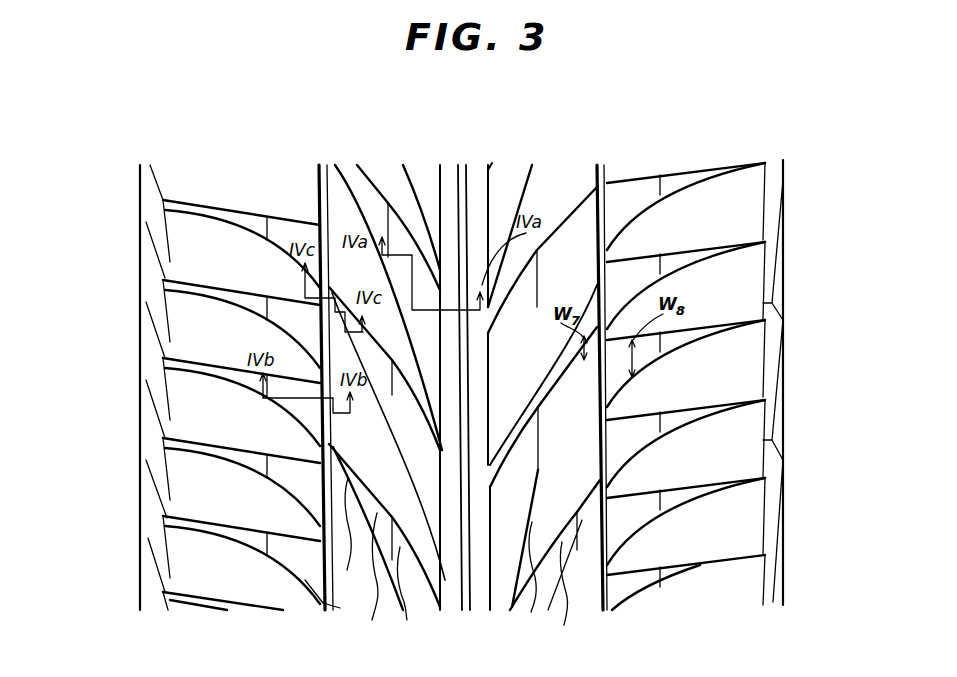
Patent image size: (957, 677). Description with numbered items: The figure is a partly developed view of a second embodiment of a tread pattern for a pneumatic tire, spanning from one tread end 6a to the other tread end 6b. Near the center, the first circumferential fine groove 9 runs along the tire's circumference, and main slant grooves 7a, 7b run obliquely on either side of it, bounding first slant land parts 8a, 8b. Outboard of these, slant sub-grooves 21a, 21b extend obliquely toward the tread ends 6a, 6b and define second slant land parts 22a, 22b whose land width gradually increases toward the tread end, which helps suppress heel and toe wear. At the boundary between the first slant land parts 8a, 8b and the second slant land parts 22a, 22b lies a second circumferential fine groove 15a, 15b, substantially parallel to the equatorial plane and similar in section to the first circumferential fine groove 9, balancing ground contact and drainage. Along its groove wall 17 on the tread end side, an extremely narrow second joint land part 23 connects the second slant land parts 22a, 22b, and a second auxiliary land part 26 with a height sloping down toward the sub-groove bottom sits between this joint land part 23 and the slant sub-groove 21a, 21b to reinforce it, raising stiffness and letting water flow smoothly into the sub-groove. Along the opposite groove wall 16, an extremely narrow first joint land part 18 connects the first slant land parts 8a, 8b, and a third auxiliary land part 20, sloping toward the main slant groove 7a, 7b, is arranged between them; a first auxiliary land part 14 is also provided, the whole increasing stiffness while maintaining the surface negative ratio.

The tread end 6a is at (369, 387).
The tread end 6b is at (753, 385).
The main slant groove 7a is at (383, 582).
The main slant groove 7b is at (577, 582).
The first slant land part 8a is at (372, 580).
The first slant land part 8b is at (519, 583).
The first circumferential fine groove 9 is at (468, 582).
The first auxiliary land part 14 is at (503, 350).
The second circumferential fine groove 15a is at (320, 165).
The second circumferential fine groove 15b is at (597, 165).
The groove wall 16 is at (328, 420).
The groove wall 17 is at (307, 503).
The first joint land part 18 is at (347, 453).
The third auxiliary land part 20 is at (373, 549).
The slant sub-groove 21a is at (230, 447).
The slant sub-groove 21b is at (715, 405).
The second slant land part 22a is at (197, 481).
The second slant land part 22b is at (737, 433).
The second joint land part 23 is at (318, 575).
The second auxiliary land part 26 is at (287, 557).